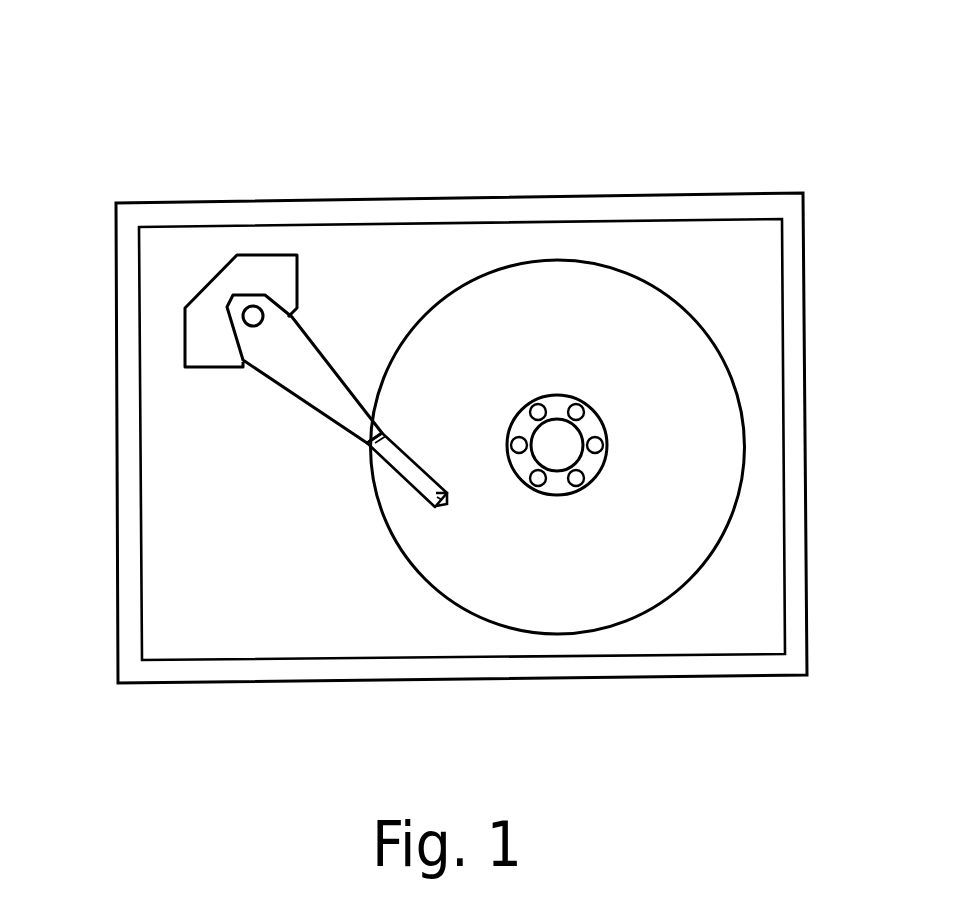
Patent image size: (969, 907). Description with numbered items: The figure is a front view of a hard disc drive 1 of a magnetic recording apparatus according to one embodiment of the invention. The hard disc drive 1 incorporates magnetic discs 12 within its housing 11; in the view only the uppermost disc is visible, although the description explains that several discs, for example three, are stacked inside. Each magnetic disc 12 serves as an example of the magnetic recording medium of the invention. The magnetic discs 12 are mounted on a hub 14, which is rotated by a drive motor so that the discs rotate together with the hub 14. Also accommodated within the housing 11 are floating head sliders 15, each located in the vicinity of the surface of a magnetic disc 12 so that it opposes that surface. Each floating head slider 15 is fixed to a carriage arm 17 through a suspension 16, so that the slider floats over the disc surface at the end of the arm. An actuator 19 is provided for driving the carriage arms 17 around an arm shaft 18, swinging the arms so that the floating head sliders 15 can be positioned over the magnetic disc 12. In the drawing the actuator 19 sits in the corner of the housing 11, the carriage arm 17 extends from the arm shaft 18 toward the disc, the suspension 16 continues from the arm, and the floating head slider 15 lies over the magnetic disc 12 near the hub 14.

The hard disc drive 1 is at (612, 122).
The housing 11 is at (740, 193).
The magnetic disc 12 is at (538, 607).
The hub 14 is at (590, 425).
The floating head slider 15 is at (437, 507).
The suspension 16 is at (407, 468).
The carriage arm 17 is at (290, 375).
The arm shaft 18 is at (253, 313).
The actuator 19 is at (205, 336).